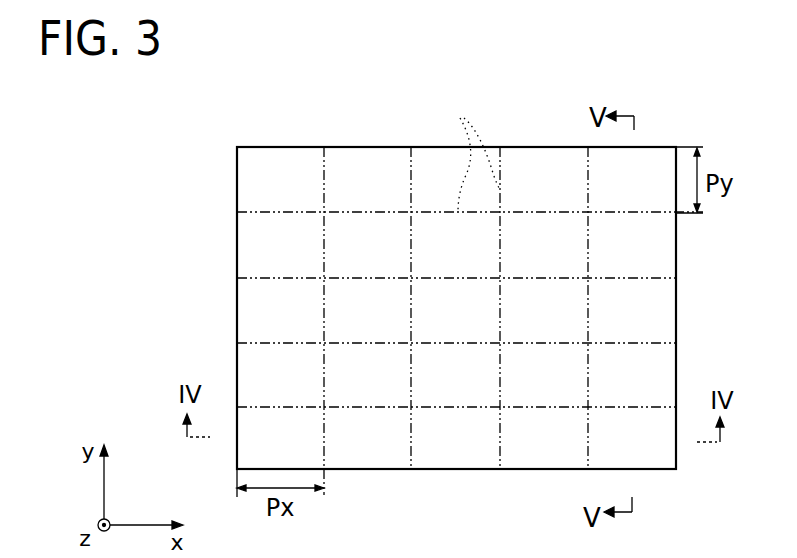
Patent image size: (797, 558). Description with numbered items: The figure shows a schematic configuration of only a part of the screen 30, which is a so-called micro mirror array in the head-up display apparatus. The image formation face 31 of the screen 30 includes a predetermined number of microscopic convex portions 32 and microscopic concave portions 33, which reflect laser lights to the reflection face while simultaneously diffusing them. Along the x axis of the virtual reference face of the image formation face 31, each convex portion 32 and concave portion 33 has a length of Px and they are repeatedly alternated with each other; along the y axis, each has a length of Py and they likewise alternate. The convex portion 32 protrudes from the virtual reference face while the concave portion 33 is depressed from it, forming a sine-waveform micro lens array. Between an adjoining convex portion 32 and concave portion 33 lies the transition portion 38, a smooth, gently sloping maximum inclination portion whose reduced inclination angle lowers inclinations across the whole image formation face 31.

The screen 30 is at (268, 147).
The image formation face 31 is at (336, 176).
The convex portion 32 is at (646, 308).
The concave portion 33 is at (646, 237).
The transition portion 38 is at (470, 151).